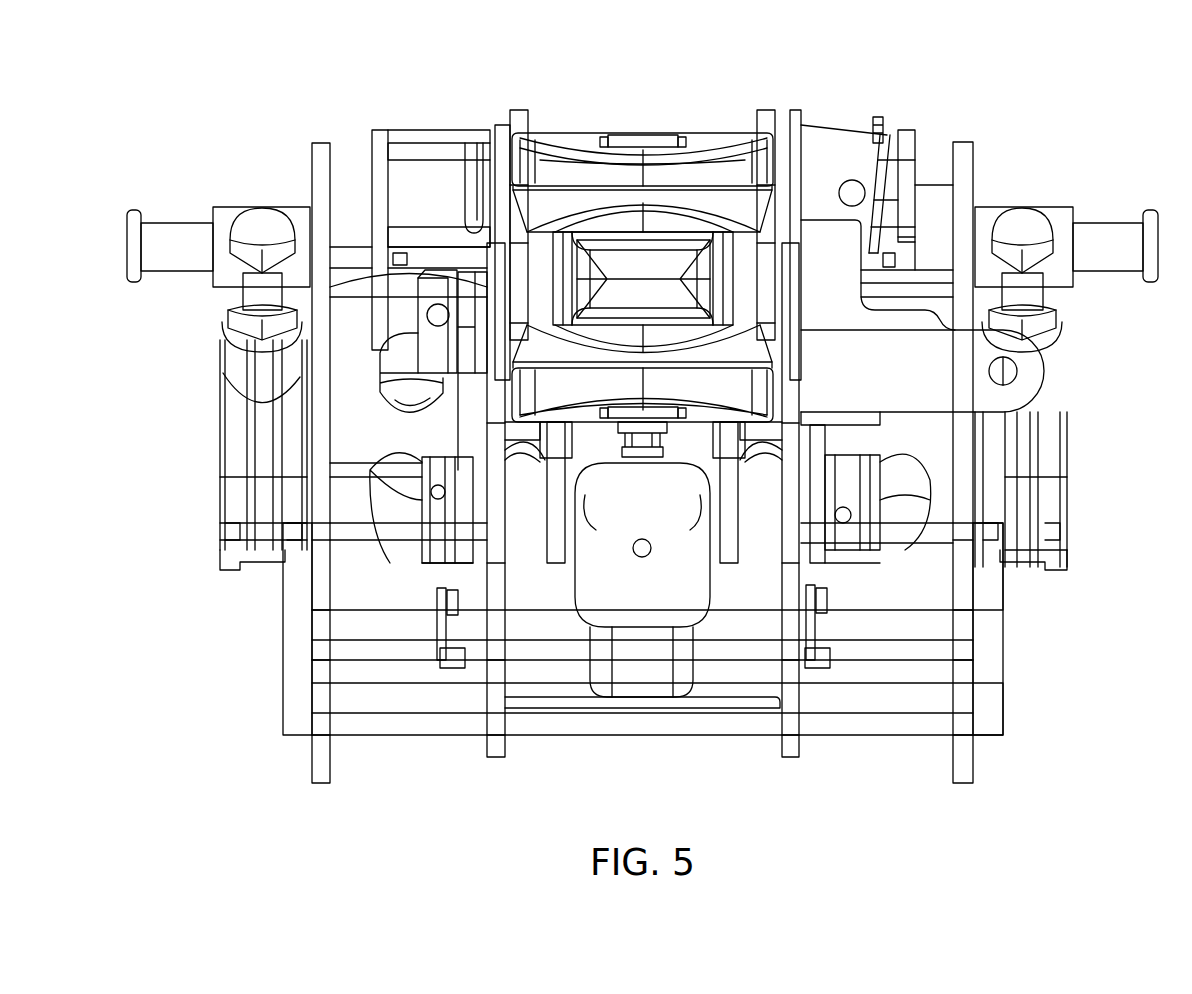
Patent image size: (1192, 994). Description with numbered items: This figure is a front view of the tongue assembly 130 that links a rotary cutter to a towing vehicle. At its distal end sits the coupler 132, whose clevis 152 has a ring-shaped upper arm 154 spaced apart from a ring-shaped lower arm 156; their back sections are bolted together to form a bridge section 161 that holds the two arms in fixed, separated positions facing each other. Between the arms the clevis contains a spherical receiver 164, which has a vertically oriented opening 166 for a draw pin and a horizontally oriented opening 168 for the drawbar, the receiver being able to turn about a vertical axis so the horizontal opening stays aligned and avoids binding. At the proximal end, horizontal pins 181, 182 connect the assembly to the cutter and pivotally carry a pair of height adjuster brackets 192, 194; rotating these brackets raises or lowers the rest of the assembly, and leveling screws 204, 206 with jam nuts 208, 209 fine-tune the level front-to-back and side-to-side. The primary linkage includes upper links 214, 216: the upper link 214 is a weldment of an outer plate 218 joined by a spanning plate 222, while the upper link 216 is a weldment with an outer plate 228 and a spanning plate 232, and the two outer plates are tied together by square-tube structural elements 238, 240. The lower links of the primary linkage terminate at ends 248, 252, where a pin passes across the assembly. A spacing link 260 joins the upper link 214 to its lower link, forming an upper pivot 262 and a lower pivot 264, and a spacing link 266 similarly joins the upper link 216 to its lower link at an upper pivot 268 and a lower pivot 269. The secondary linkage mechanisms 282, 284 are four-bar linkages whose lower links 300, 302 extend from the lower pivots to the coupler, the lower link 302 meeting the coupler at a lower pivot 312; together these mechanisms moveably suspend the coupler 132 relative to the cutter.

The tongue assembly 130 is at (1078, 112).
The coupler 132 is at (732, 118).
The clevis 152 is at (482, 205).
The upper arm 154 is at (568, 168).
The lower arm 156 is at (600, 455).
The bridge section 161 is at (662, 250).
The spherical receiver 164 is at (572, 196).
The opening 166 is at (645, 133).
The opening 168 is at (607, 320).
The pin 181 is at (205, 223).
The pin 182 is at (1100, 223).
The height adjuster bracket 192 is at (232, 497).
The height adjuster bracket 194 is at (1053, 452).
The leveling screw 204 is at (1022, 225).
The leveling screw 206 is at (262, 225).
The jam nut 208 is at (1040, 325).
The jam nut 209 is at (245, 325).
The upper link 214 is at (345, 432).
The upper link 216 is at (1012, 425).
The outer plate 218 is at (352, 390).
The spanning plate 222 is at (352, 340).
The outer plate 228 is at (972, 168).
The spanning plate 232 is at (925, 440).
The structural element 238 is at (1005, 698).
The structural element 240 is at (1005, 582).
The end 248 is at (558, 508).
The end 252 is at (728, 508).
The spacing link 260 is at (465, 410).
The upper pivot 262 is at (412, 312).
The lower pivot 264 is at (432, 566).
The spacing link 266 is at (818, 445).
The upper pivot 268 is at (872, 293).
The lower pivot 269 is at (876, 556).
The secondary linkage mechanism 282 is at (476, 588).
The secondary linkage mechanism 284 is at (818, 572).
The lower link 300 is at (600, 480).
The lower link 302 is at (685, 480).
The lower pivot 312 is at (803, 360).